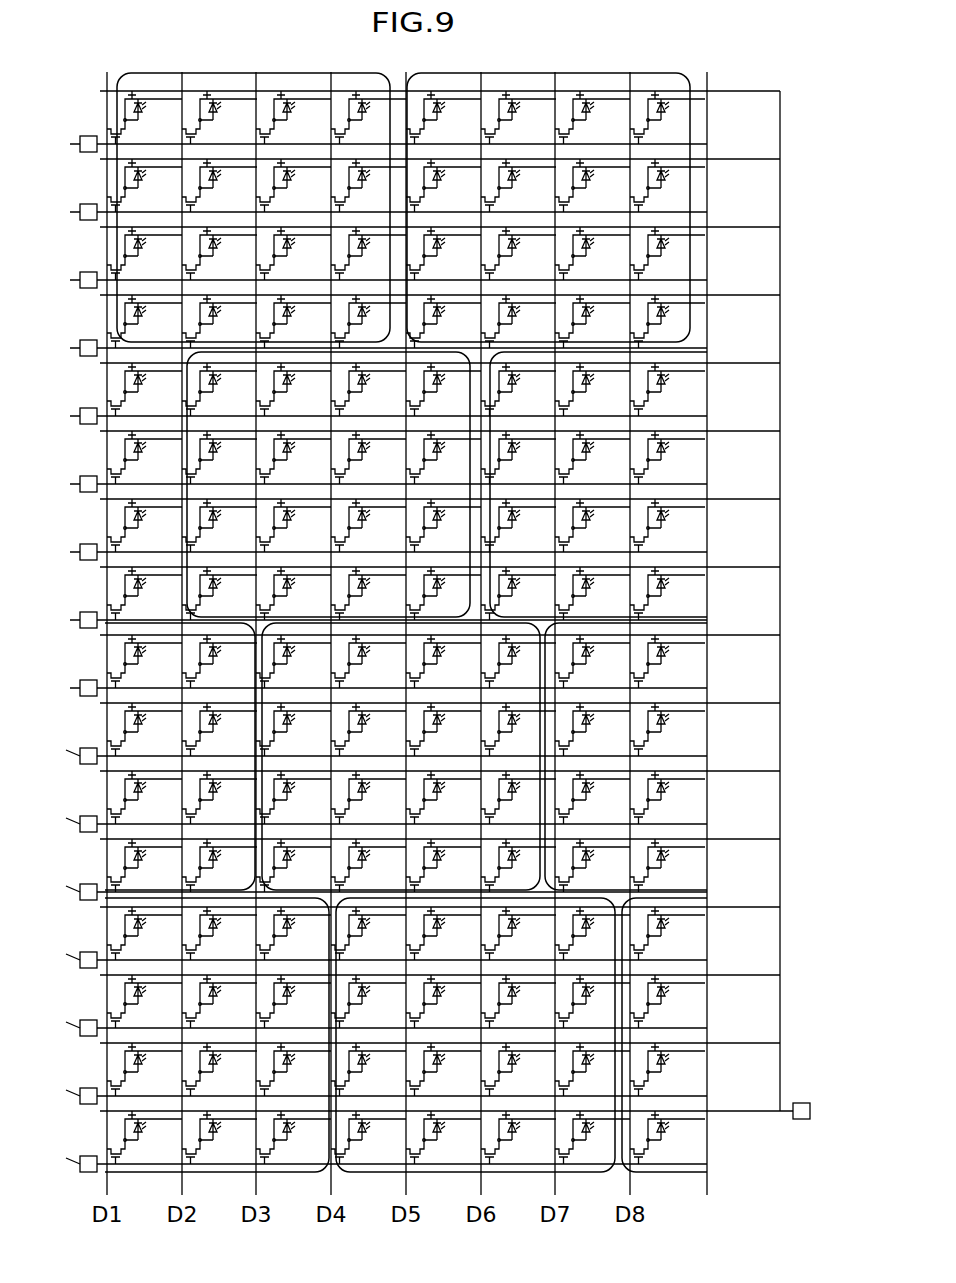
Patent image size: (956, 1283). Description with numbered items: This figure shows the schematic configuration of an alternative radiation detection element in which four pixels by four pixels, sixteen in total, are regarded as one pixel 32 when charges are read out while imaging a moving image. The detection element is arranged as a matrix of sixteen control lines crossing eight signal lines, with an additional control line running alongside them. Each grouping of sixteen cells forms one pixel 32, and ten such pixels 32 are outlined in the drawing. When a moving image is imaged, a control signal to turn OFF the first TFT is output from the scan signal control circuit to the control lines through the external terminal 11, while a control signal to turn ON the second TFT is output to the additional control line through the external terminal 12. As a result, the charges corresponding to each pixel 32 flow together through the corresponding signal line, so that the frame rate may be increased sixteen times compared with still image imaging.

The external terminal 11 is at (90, 136).
The external terminal 12 is at (801, 1103).
The pixel 32 is at (451, 622).